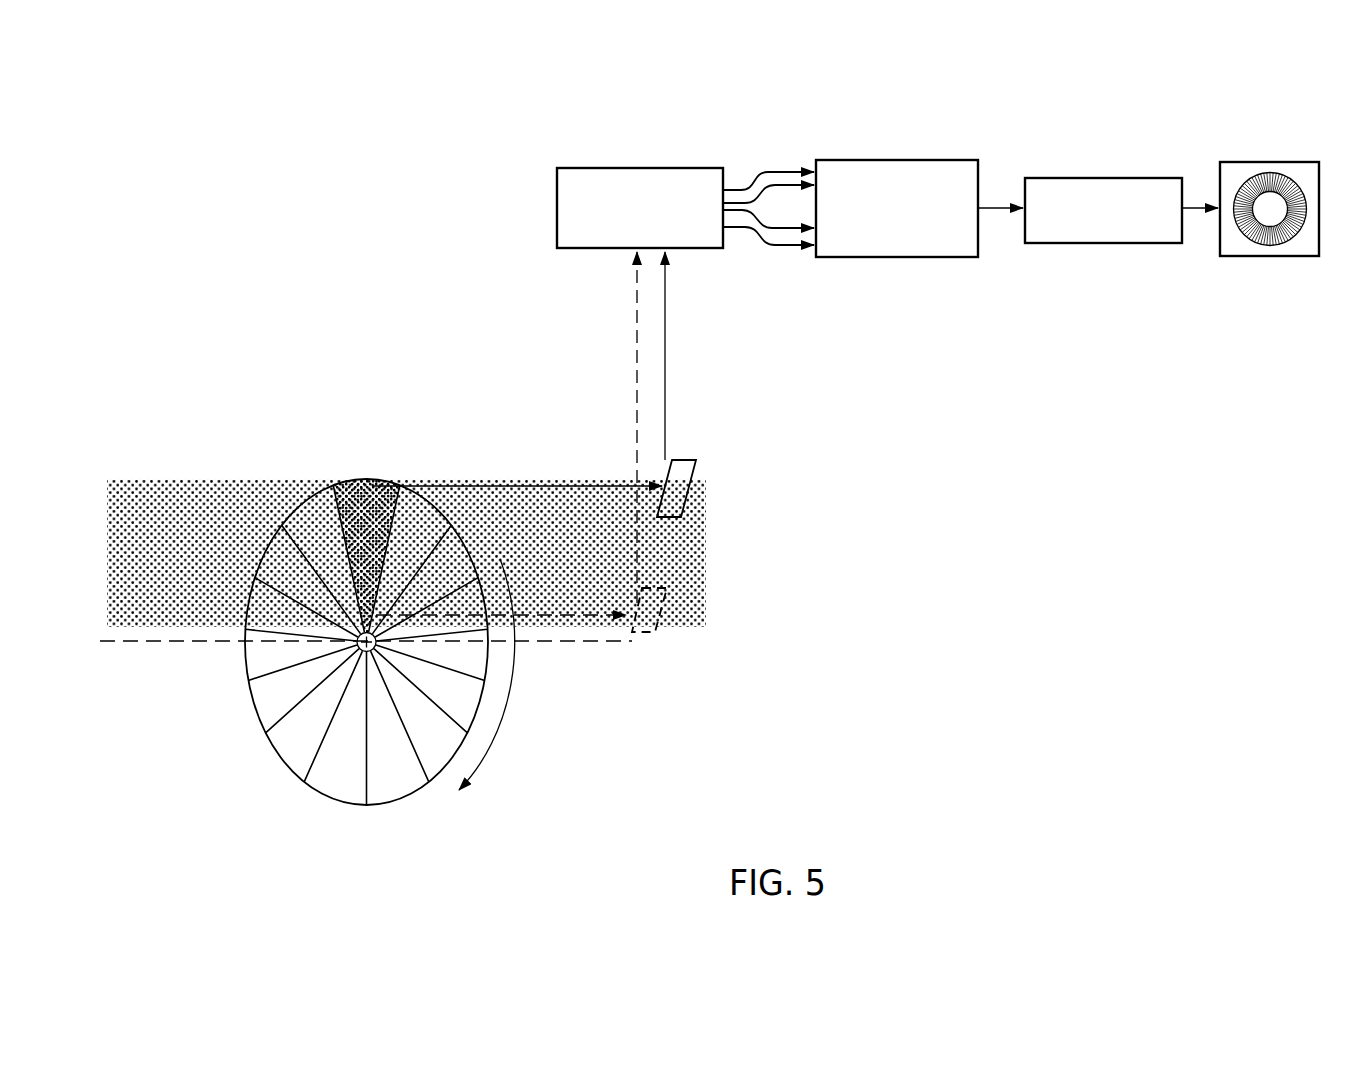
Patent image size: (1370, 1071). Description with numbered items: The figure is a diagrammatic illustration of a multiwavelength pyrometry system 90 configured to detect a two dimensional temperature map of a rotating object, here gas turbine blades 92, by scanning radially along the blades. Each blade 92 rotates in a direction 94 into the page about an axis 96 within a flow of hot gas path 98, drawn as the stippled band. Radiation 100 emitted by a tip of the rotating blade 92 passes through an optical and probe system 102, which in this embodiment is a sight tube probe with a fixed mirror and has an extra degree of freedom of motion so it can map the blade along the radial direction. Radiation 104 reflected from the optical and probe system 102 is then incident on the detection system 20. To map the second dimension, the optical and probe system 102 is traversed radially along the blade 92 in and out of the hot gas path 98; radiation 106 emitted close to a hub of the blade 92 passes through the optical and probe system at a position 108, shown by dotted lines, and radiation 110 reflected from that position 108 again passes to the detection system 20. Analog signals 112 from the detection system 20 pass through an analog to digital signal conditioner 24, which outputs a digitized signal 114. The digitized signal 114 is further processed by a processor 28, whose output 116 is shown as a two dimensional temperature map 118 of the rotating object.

The multiwavelength pyrometry system 90 is at (282, 100).
The detection system 20 is at (632, 168).
The analog to digital signal conditioner 24 is at (898, 160).
The processor 28 is at (1101, 178).
The two dimensional temperature map 118 is at (1267, 172).
The analog signals 112 is at (800, 168).
The digitized signal 114 is at (1000, 212).
The processor output 116 is at (1197, 212).
The radiation reflected from the optical and probe system at the second position 110 is at (637, 332).
The radiation reflected from the optical and probe system 104 is at (665, 340).
The gas turbine blades 92 is at (368, 479).
The direction of rotation 94 is at (490, 750).
The axis 96 is at (548, 643).
The hot gas path 98 is at (203, 585).
The radiation emitted by the blade tip 100 is at (480, 486).
The optical and probe system 102 is at (697, 467).
The radiation emitted close to the blade hub 106 is at (610, 618).
The position of the optical and probe system 108 is at (690, 668).